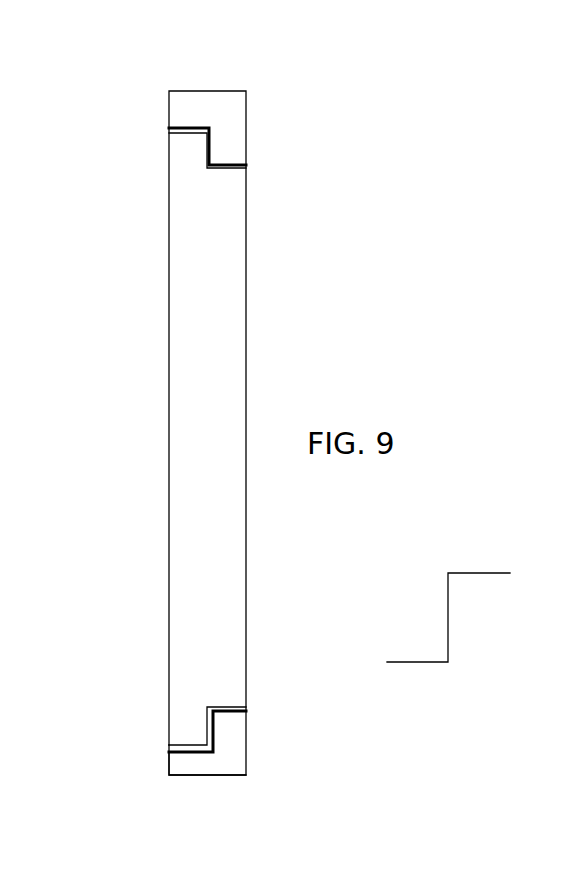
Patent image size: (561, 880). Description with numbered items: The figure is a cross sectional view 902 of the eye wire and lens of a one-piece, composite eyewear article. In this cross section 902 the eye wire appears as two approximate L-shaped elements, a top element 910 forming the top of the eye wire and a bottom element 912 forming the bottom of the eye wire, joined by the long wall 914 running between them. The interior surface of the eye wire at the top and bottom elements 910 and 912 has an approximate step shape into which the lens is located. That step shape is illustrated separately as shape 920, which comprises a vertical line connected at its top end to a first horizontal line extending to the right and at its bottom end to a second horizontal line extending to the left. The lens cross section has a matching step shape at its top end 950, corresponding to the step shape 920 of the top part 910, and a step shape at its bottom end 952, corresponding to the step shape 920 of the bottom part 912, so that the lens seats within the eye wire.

The cross sectional view 902 is at (162, 52).
The top element of eye wire 910 is at (245, 90).
The bottom element of eye wire 912 is at (213, 776).
The side wall 914 is at (168, 512).
The step shape 920 is at (490, 565).
The step shape at top end of lens 950 is at (197, 152).
The step shape at bottom end of lens 952 is at (190, 738).